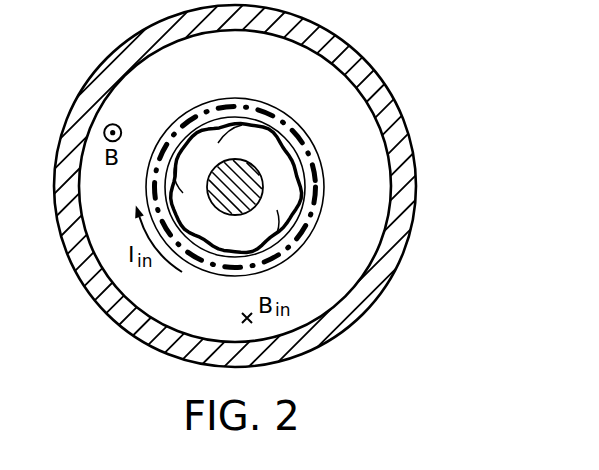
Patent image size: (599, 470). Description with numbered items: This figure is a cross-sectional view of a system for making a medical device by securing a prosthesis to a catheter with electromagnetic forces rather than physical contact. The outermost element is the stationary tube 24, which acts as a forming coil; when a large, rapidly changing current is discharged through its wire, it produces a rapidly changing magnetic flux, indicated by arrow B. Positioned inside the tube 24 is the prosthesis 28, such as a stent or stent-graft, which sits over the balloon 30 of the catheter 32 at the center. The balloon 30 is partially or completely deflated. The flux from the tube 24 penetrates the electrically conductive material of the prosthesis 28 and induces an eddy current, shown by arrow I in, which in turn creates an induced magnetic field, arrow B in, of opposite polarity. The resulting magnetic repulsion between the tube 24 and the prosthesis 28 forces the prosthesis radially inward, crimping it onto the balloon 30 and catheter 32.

The tube 24 is at (397, 132).
The prosthesis 28 is at (312, 141).
The balloon 30 is at (297, 205).
The catheter 32 is at (240, 176).